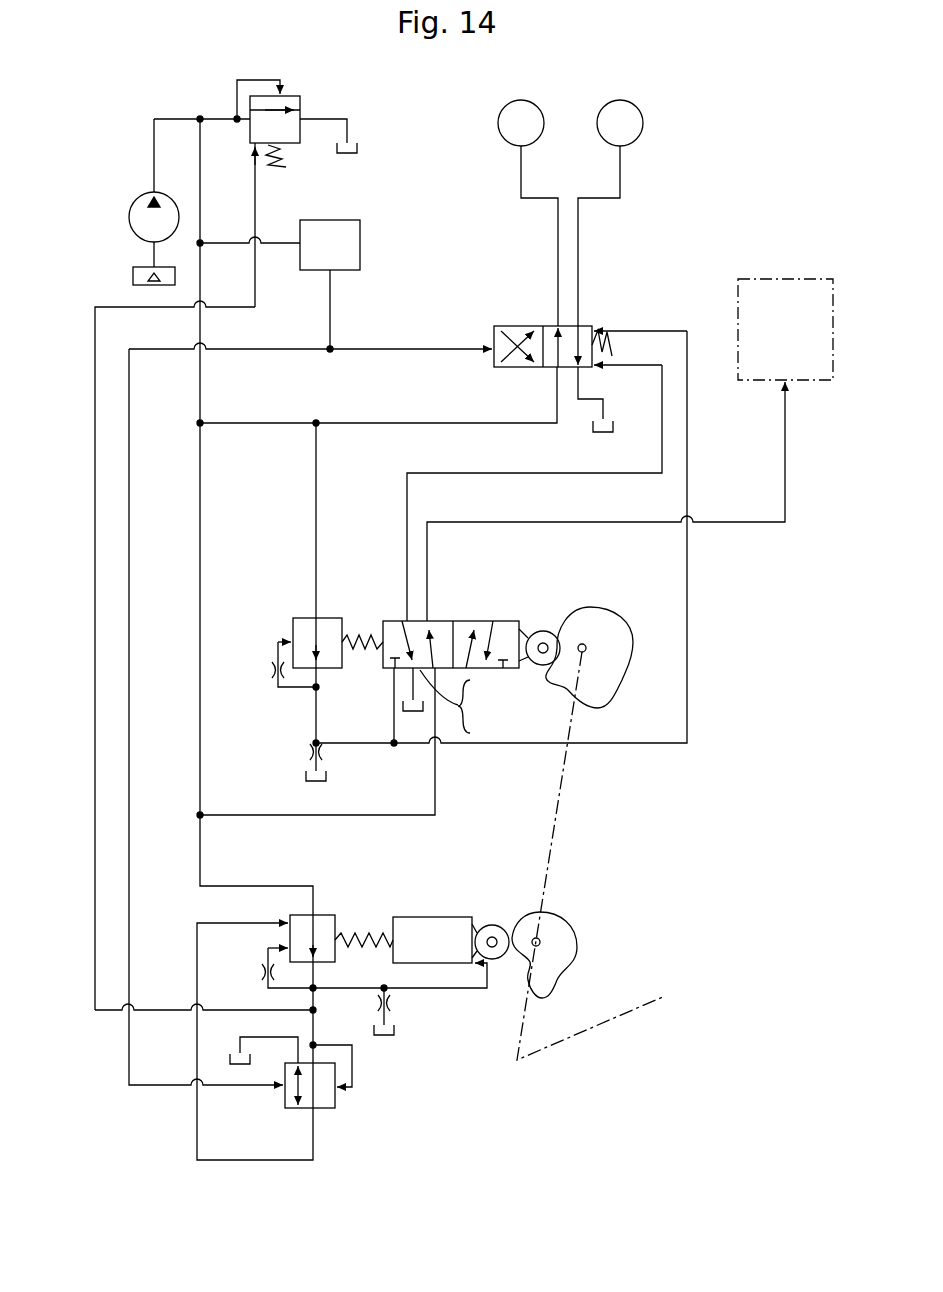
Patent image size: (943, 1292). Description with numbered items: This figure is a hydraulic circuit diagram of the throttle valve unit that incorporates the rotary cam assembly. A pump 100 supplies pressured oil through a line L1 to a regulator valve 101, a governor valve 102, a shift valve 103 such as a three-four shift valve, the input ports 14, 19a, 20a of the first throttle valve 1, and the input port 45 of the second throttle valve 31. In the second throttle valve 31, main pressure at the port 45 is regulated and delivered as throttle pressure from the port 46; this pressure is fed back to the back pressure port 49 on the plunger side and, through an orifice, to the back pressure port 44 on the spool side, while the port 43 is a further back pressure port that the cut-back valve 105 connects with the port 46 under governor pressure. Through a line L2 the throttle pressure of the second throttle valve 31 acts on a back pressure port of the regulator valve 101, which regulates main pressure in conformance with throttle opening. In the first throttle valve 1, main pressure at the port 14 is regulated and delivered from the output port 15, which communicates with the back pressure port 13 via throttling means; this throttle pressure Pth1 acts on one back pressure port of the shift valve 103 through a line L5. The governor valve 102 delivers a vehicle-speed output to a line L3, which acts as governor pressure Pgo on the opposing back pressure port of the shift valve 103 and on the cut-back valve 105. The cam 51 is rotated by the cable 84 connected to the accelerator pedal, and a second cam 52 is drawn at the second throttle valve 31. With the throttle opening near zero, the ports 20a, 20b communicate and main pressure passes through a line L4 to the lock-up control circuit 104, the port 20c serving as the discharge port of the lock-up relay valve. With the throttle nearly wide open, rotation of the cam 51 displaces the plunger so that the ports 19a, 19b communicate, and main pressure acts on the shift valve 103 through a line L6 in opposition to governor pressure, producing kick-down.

The first throttle valve 1 is at (500, 615).
The back pressure port 13 is at (290, 640).
The central port 14 is at (313, 618).
The output port 15 is at (318, 668).
The port 19a is at (456, 681).
The port 19b is at (407, 621).
The port 20a is at (451, 682).
The output port 20b is at (428, 621).
The port 20c is at (416, 670).
The second throttle valve 31 is at (464, 907).
The port 43 is at (282, 920).
The port 44 is at (282, 946).
The input port 45 is at (315, 914).
The port 46 is at (316, 963).
The port 49 is at (477, 972).
The cam 51 is at (606, 622).
The cam 52 is at (568, 950).
The cable 84 is at (603, 1023).
The pump 100 is at (131, 223).
The regulator valve 101 is at (289, 96).
The governor valve 102 is at (361, 238).
The shift valve 103 is at (537, 322).
The lock-up control circuit 104 is at (787, 278).
The cut-back valve 105 is at (323, 1110).
The line L1 is at (202, 178).
The line L2 is at (92, 993).
The line L3 is at (333, 317).
The line L4 is at (550, 522).
The line L5 is at (635, 747).
The line L6 is at (484, 472).
The governor pressure Pgo is at (310, 337).
The throttle pressure Pth1 is at (640, 318).